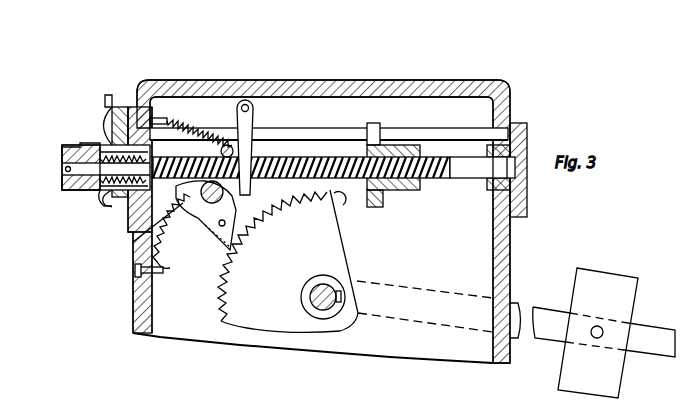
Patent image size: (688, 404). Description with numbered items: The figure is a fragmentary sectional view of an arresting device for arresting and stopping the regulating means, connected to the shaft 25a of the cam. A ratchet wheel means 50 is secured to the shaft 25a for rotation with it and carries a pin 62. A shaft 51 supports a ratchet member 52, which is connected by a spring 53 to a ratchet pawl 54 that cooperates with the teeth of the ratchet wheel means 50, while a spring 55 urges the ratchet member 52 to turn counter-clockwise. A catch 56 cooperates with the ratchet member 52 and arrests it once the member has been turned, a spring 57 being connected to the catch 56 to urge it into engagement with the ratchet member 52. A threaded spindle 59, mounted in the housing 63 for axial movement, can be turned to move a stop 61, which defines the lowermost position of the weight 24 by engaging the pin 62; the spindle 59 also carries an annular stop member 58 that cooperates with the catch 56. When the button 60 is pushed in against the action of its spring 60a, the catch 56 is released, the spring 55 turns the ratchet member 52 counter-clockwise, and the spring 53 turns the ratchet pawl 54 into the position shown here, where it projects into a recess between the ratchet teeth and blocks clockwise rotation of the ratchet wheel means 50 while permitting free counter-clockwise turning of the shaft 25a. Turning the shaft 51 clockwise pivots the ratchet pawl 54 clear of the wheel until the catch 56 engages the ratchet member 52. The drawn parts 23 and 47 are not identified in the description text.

The arm bar 23 is at (653, 335).
The weight 24 is at (625, 290).
The shaft 25a is at (323, 310).
The collar 47 is at (106, 195).
The ratchet wheel means 50 is at (325, 250).
The shaft 51 is at (218, 197).
The ratchet member 52 is at (133, 242).
The spring 53 is at (182, 195).
The ratchet pawl 54 is at (200, 218).
The spring 55 is at (182, 196).
The catch 56 is at (247, 100).
The spring 57 is at (173, 127).
The annular stop member 58 is at (213, 142).
The threaded spindle 59 is at (303, 138).
The button 60 is at (62, 151).
The spring 60a is at (97, 145).
The stop 61 is at (383, 146).
The pin 62 is at (345, 202).
The housing 63 is at (506, 96).